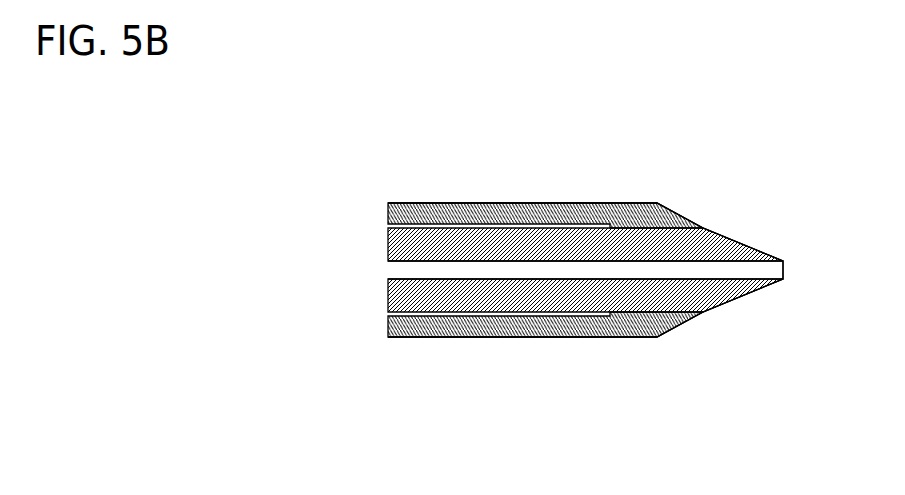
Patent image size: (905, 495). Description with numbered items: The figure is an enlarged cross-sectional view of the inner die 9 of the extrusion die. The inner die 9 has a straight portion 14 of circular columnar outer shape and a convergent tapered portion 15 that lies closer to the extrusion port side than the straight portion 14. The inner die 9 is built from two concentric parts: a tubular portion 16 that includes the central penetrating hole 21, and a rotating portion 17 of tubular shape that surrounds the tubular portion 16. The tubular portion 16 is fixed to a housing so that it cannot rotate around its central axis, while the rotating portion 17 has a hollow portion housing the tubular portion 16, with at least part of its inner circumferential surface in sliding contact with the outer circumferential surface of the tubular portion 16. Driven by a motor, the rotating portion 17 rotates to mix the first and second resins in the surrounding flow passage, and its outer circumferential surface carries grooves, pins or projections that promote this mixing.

The inner die 9 is at (338, 163).
The straight portion 14 is at (655, 191).
The convergent tapered portion 15 is at (783, 191).
The tubular portion 16 is at (388, 246).
The rotating portion 17 is at (388, 215).
The penetrating hole 21 is at (390, 272).